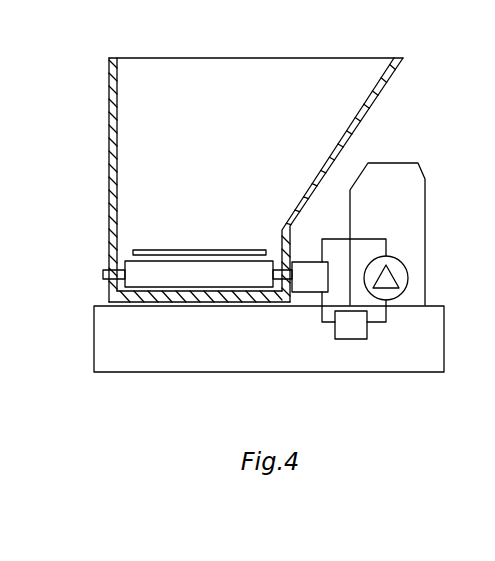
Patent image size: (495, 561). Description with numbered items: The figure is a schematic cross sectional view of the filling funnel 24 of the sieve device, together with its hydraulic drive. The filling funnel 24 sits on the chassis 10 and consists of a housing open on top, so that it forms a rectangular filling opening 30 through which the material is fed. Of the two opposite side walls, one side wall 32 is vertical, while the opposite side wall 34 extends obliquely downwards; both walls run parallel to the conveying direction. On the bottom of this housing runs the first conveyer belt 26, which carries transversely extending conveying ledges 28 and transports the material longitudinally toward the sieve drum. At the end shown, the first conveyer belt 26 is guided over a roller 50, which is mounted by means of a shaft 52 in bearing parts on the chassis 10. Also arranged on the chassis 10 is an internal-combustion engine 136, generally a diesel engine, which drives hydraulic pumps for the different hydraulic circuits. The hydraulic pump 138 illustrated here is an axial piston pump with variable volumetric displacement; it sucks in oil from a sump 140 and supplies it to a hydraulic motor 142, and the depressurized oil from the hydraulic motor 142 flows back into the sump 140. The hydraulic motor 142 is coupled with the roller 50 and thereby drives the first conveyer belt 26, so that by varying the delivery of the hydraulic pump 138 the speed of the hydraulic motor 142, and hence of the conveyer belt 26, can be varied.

The chassis 10 is at (432, 334).
The filling funnel 24 is at (247, 159).
The first conveyer belt 26 is at (270, 255).
The conveying ledges 28 is at (187, 255).
The filling opening 30 is at (236, 78).
The side wall 32 is at (117, 163).
The side wall 34 is at (380, 93).
The roller 50 is at (155, 277).
The shaft 52 is at (102, 269).
The internal-combustion engine 136 is at (410, 198).
The hydraulic pump 138 is at (400, 263).
The sump 140 is at (352, 330).
The hydraulic motor 142 is at (307, 277).